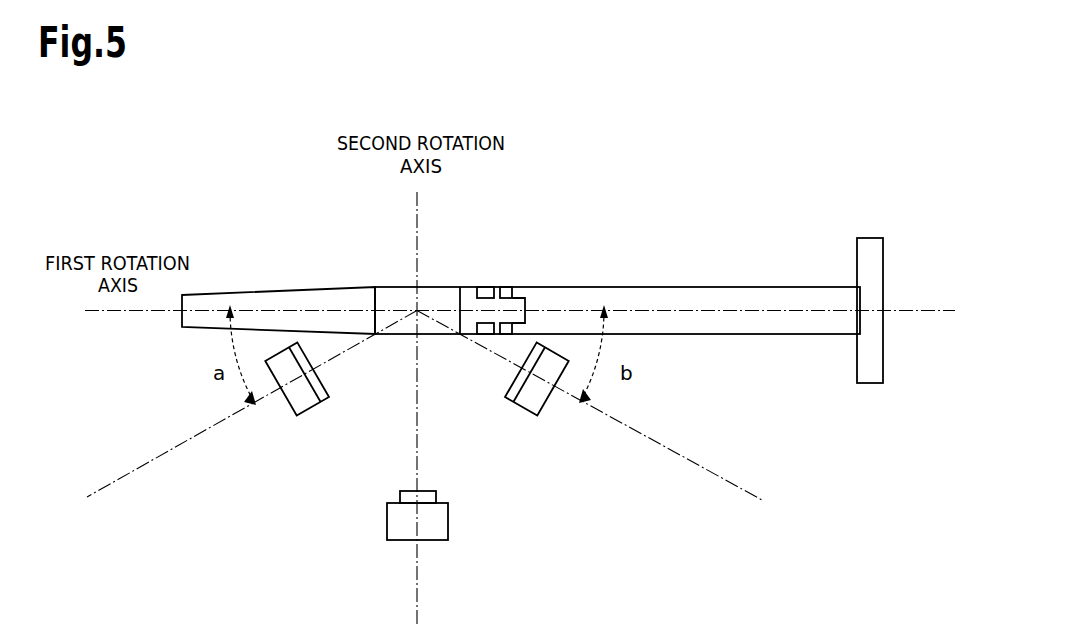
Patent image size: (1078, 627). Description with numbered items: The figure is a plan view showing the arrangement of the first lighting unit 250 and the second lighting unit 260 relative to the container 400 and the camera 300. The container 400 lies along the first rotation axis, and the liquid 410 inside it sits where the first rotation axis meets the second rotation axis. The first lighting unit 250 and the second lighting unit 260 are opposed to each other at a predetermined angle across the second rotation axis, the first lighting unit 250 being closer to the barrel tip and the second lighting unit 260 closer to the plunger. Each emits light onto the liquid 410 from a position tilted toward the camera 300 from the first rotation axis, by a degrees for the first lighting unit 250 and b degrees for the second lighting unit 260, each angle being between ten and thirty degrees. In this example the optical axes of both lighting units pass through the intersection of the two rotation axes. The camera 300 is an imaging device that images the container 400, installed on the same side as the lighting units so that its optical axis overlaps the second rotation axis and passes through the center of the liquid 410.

The first lighting unit 250 is at (312, 405).
The second lighting unit 260 is at (547, 408).
The camera 300 is at (448, 521).
The container 400 is at (709, 287).
The liquid 410 is at (437, 287).